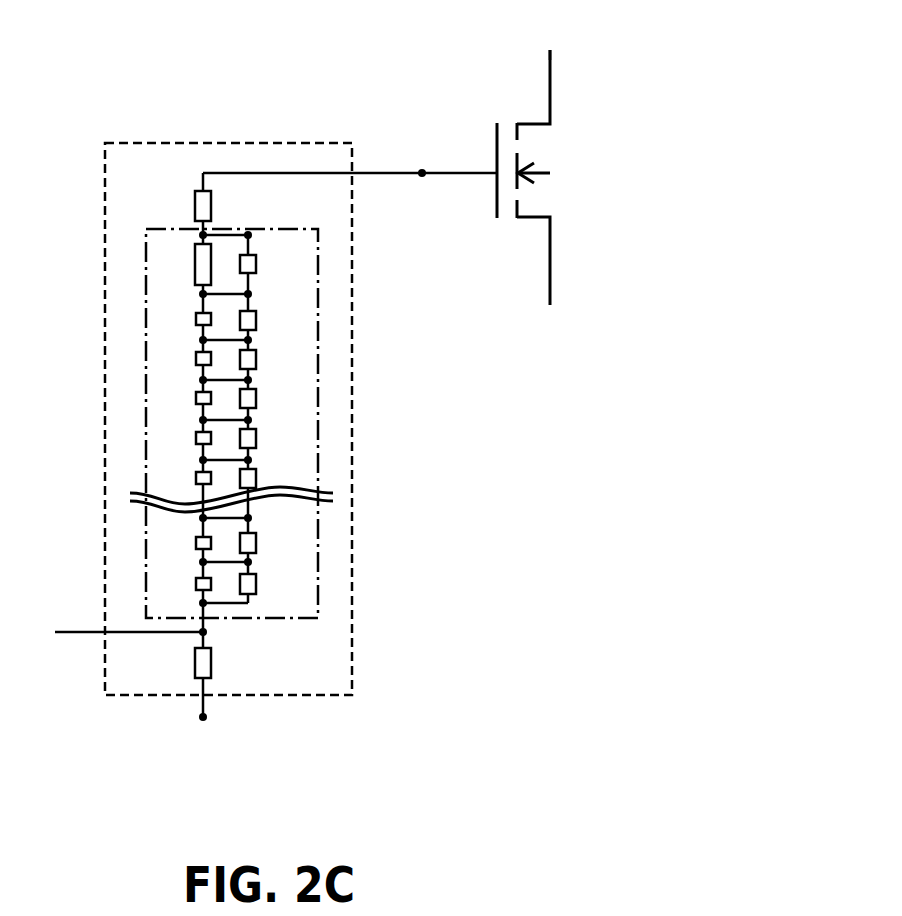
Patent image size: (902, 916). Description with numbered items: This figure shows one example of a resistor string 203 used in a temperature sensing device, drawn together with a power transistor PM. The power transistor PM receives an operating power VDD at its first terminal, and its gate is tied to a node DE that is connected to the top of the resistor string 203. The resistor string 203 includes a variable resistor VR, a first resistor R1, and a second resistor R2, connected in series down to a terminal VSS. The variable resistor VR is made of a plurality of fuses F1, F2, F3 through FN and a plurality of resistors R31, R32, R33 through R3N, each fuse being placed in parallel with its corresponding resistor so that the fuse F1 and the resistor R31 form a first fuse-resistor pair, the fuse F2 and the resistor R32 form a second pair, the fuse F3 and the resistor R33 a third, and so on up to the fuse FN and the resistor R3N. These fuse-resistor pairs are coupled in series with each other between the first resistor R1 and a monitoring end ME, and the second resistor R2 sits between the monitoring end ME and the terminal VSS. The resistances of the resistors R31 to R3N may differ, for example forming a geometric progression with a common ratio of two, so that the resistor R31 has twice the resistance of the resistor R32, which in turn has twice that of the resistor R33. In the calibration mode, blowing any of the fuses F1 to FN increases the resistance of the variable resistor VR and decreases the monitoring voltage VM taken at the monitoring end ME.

The resistor string 203 is at (288, 141).
The variable resistor VR is at (252, 230).
The first resistor R1 is at (219, 205).
The second resistor R2 is at (221, 670).
The fuse F1 is at (184, 265).
The fuse F2 is at (184, 321).
The fuse F3 is at (184, 360).
The fuse FN is at (184, 585).
The resistor R31 is at (270, 267).
The resistor R32 is at (272, 321).
The resistor R33 is at (272, 360).
The resistor R3N is at (273, 585).
The monitoring end ME is at (207, 633).
The monitoring voltage VM is at (109, 633).
The ground voltage terminal VSS is at (211, 737).
The detection node DE is at (423, 168).
The power transistor PM is at (545, 177).
The operating power VDD is at (545, 37).